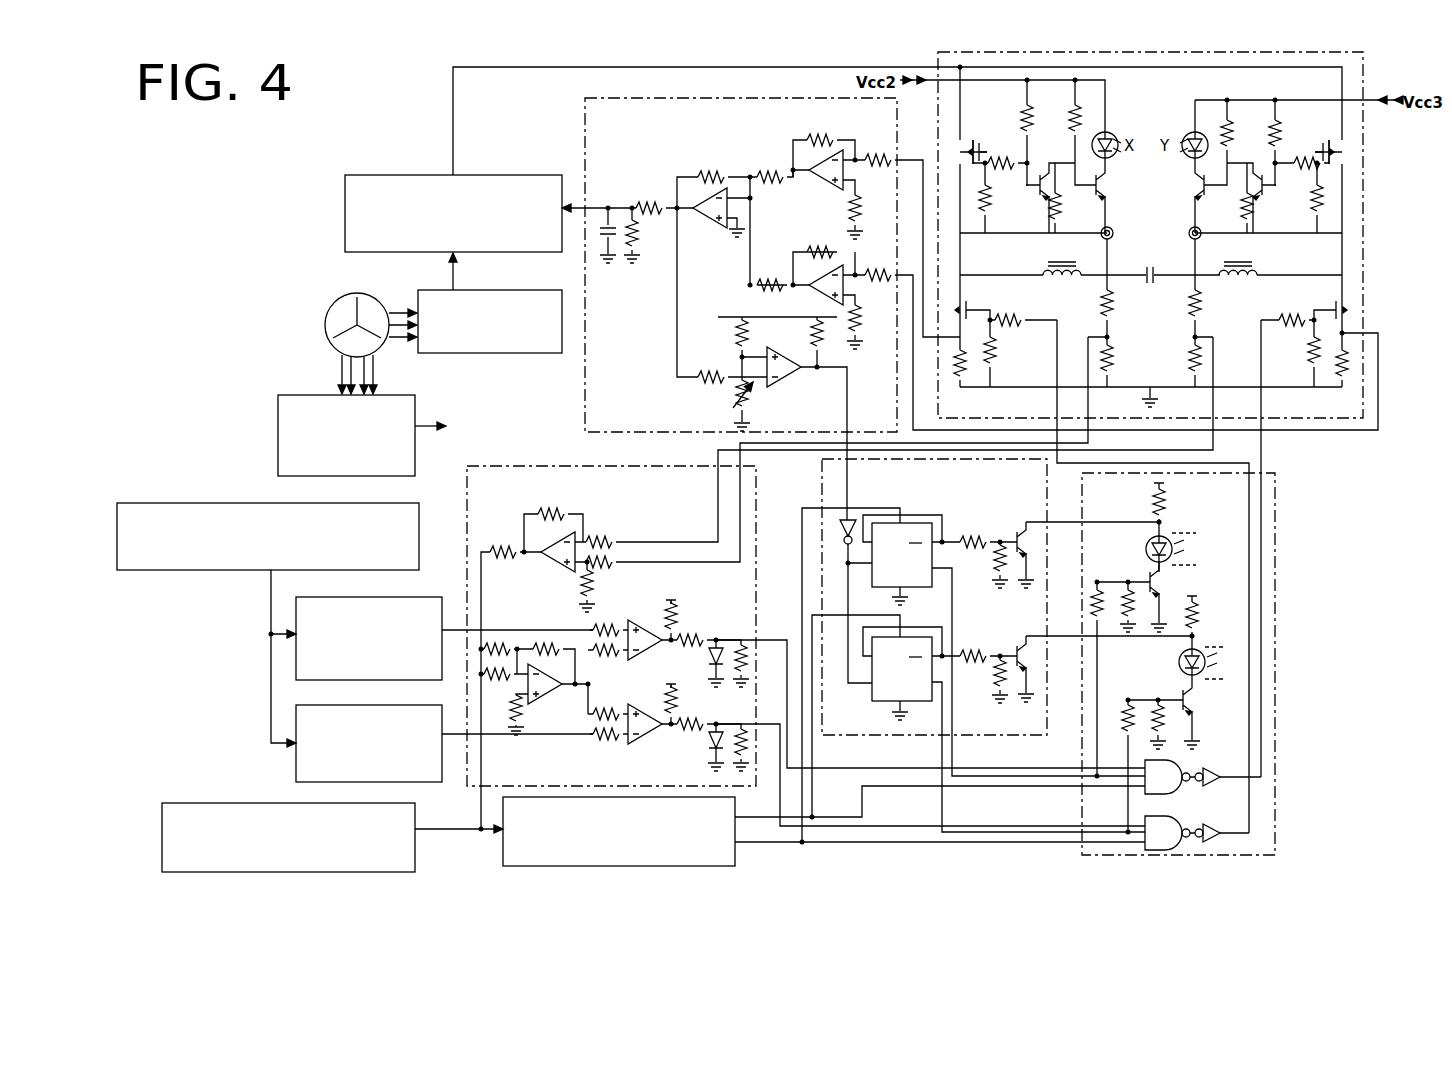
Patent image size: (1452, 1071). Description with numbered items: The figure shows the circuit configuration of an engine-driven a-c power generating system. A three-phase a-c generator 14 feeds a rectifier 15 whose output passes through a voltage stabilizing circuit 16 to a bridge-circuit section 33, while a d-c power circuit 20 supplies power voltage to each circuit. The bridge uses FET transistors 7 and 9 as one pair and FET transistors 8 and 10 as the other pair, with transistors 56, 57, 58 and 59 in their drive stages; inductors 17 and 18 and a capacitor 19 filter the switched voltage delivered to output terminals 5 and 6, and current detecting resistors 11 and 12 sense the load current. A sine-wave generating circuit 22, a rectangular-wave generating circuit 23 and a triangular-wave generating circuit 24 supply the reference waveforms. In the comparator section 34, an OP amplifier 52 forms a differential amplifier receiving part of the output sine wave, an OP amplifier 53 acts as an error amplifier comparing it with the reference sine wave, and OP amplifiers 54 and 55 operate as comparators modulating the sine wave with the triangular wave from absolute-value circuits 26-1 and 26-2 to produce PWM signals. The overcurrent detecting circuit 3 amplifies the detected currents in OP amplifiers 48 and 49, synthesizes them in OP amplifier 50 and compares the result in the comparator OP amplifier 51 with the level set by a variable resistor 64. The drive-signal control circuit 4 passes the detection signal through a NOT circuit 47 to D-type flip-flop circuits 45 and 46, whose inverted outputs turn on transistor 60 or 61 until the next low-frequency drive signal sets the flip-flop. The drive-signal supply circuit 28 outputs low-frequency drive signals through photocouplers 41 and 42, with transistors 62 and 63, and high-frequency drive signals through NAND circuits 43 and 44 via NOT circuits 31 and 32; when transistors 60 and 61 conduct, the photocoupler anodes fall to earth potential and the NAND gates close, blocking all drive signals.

The overcurrent detecting circuit 3 is at (582, 122).
The drive-signal control circuit 4 is at (822, 495).
The output terminal 5 is at (1113, 228).
The output terminal 6 is at (1189, 228).
The FET transistor 7 is at (1328, 140).
The FET transistor 8 is at (974, 140).
The FET transistor 9 is at (978, 308).
The FET transistor 10 is at (1326, 312).
The current detecting resistor 11 is at (964, 362).
The current detecting resistor 12 is at (1336, 360).
The three-phase a-c generator 14 is at (325, 325).
The rectifier 15 is at (508, 290).
The voltage stabilizing circuit 16 is at (382, 175).
The inductor 17 is at (1058, 262).
The inductor 18 is at (1248, 262).
The capacitor 19 is at (1151, 268).
The d-c power circuit 20 is at (278, 438).
The sine-wave generating circuit 22 is at (216, 803).
The rectangular-wave generating circuit 23 is at (503, 852).
The triangular-wave generating circuit 24 is at (155, 503).
The absolute-value circuit 26-1 is at (352, 597).
The absolute-value circuit 26-2 is at (352, 705).
The drive-signal supply circuit 28 is at (1275, 518).
The NOT circuit 31 is at (1212, 770).
The NOT circuit 32 is at (1217, 826).
The bridge-circuit section 33 is at (1338, 418).
The comparator section 34 is at (587, 466).
The photocoupler 41 is at (1172, 540).
The photocoupler 42 is at (1205, 648).
The NAND circuit 43 is at (1156, 794).
The NAND circuit 44 is at (1188, 847).
The flip-flop circuit 45 is at (910, 590).
The flip-flop circuit 46 is at (878, 712).
The NOT circuit 47 is at (840, 530).
The OP amplifier 48 is at (876, 235).
The OP amplifier 49 is at (815, 303).
The OP amplifier 50 is at (710, 226).
The OP amplifier 51 is at (779, 352).
The OP amplifier 52 is at (552, 570).
The OP amplifier 53 is at (546, 702).
The OP amplifier 54 is at (650, 660).
The OP amplifier 55 is at (652, 744).
The transistor 56 is at (1026, 185).
The transistor 57 is at (1106, 198).
The transistor 58 is at (1276, 185).
The transistor 59 is at (1200, 188).
The transistor 60 is at (1035, 540).
The transistor 61 is at (1035, 654).
The transistor 62 is at (1170, 585).
The transistor 63 is at (1190, 703).
The variable resistor 64 is at (754, 396).